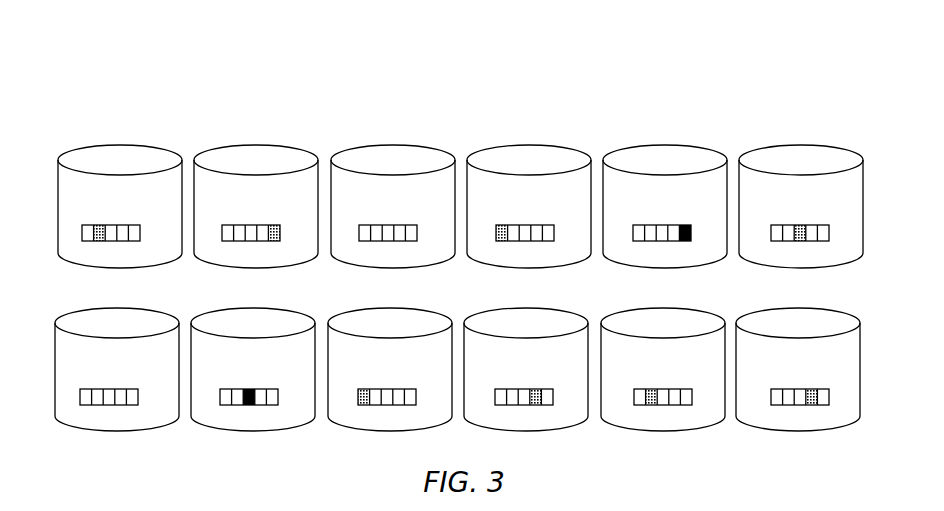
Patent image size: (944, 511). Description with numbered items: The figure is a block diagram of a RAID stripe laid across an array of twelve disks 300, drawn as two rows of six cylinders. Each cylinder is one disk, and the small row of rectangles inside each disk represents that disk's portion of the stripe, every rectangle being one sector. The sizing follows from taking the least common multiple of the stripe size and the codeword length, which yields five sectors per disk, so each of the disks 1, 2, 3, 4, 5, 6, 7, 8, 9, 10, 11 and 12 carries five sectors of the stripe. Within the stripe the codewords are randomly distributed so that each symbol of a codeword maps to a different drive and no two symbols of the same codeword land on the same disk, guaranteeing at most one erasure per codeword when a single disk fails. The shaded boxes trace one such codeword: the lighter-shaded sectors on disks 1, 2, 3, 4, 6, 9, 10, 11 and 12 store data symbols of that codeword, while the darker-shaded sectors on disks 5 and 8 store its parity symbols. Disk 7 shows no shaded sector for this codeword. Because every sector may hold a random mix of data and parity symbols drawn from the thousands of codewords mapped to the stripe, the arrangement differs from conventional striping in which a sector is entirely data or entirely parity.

The array of disks 300 is at (444, 120).
The disk 1 is at (120, 206).
The disk 2 is at (256, 206).
The disk 3 is at (393, 206).
The disk 4 is at (529, 206).
The disk 5 is at (665, 206).
The disk 6 is at (801, 206).
The disk 7 is at (117, 369).
The disk 8 is at (253, 369).
The disk 9 is at (390, 369).
The disk 10 is at (526, 369).
The disk 11 is at (663, 369).
The disk 12 is at (798, 369).